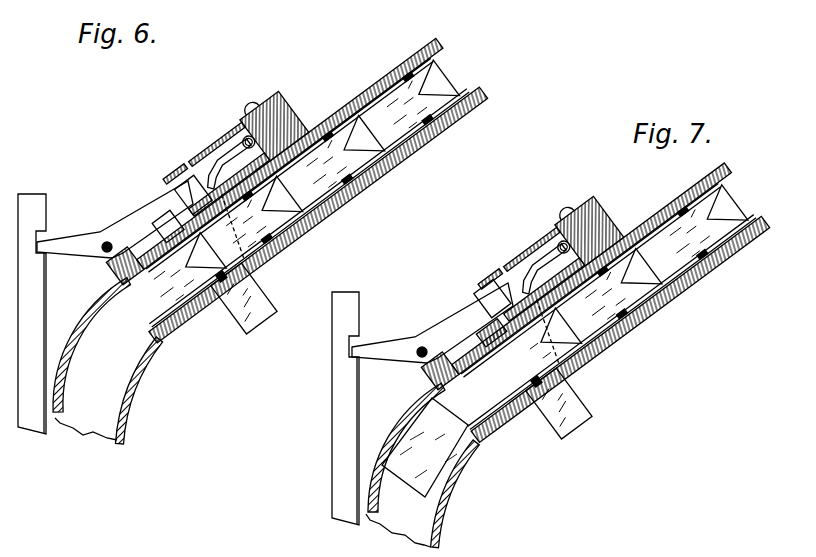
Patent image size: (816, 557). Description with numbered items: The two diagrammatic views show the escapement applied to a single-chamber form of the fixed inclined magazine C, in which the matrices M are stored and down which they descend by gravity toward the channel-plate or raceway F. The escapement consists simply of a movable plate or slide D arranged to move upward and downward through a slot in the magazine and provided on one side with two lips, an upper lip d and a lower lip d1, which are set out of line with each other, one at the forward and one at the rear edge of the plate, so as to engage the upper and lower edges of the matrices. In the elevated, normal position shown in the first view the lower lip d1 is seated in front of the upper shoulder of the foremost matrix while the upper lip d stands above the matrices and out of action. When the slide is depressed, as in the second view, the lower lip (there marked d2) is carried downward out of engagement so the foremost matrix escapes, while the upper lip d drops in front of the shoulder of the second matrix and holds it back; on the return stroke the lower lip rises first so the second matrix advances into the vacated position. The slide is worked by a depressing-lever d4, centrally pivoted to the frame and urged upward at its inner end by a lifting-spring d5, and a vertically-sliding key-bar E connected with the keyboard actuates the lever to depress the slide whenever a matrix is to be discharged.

In FIG. 6, the magazine C is at (412, 152).
In FIG. 7, the magazine C is at (746, 252).
In FIG. 6, the escapement-slide D is at (253, 284).
In FIG. 7, the escapement-slide D is at (578, 398).
In FIG. 6, the key-bar E is at (32, 314).
In FIG. 7, the key-bar E is at (345, 408).
In FIG. 6, the channel-plate F is at (109, 363).
In FIG. 7, the channel-plate F is at (417, 505).
In FIG. 6, the matrices M is at (302, 185).
In FIG. 7, the matrices M is at (565, 341).
In FIG. 6, the upper lip d is at (199, 228).
In FIG. 7, the upper lip d is at (513, 342).
In FIG. 6, the lower lip d1 is at (237, 300).
In FIG. 7, the slide stop d2 is at (540, 406).
In FIG. 6, the depressing-lever d4 is at (131, 228).
In FIG. 7, the depressing-lever d4 is at (414, 340).
In FIG. 6, the lifting-spring d5 is at (203, 172).
In FIG. 7, the lifting-spring d5 is at (540, 272).